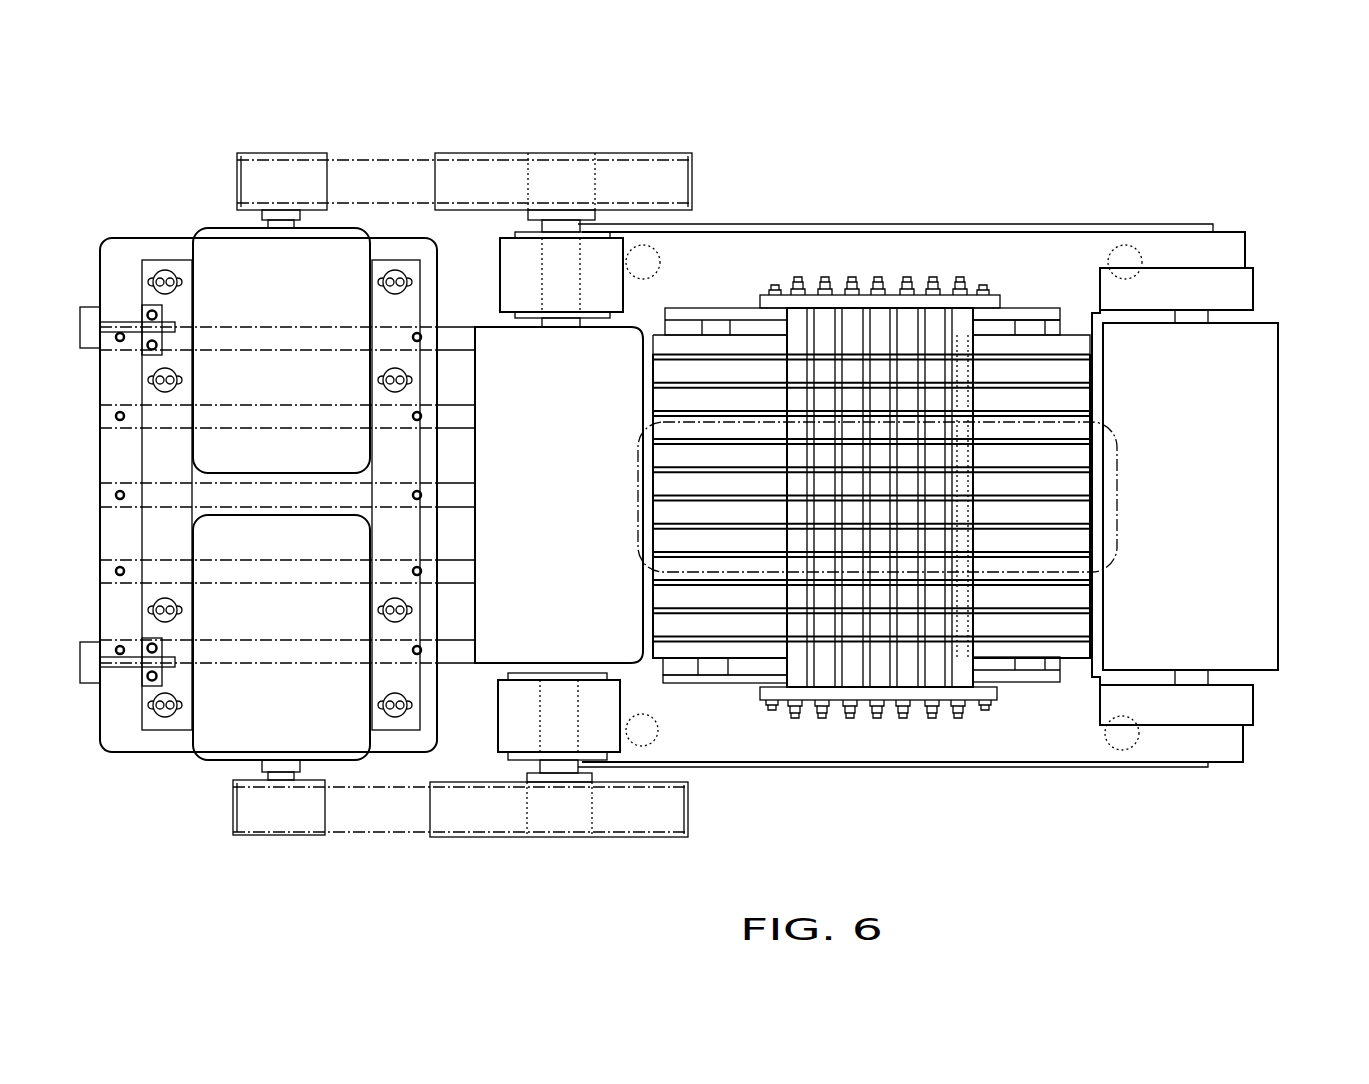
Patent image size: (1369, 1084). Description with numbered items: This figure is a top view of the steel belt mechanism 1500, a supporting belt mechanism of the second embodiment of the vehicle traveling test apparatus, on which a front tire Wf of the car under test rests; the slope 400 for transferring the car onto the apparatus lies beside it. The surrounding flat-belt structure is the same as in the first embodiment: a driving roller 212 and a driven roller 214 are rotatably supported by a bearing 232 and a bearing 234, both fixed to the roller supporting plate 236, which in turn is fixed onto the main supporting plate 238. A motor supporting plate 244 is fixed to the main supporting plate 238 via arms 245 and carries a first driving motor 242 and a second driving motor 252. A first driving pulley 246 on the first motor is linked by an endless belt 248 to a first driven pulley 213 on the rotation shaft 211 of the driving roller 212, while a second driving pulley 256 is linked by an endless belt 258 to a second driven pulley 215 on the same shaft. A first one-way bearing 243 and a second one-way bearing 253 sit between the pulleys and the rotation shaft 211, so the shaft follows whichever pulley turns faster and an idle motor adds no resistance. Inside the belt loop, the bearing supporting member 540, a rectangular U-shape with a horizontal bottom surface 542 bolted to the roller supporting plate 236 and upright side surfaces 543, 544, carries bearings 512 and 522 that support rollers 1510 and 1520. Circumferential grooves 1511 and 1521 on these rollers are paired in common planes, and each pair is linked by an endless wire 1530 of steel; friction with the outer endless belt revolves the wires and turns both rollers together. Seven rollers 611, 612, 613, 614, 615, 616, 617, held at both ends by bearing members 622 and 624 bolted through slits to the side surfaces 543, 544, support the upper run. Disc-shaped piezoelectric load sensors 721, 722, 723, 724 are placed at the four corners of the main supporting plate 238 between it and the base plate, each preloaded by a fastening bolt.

The rotation shaft 211 is at (540, 288).
The driving roller 212 is at (470, 352).
The first driven pulley 213 is at (655, 838).
The driven roller 214 is at (1280, 375).
The second driven pulley 215 is at (500, 153).
The bearing 232 is at (500, 250).
The bearing 234 is at (1253, 291).
The roller supporting plate 236 is at (1000, 763).
The main supporting plate 238 is at (1100, 768).
The first driving motor 242 is at (210, 762).
The first one-way bearing 243 is at (527, 815).
The motor supporting plate 244 is at (123, 256).
The arms 245 is at (470, 326).
The first driving pulley 246 is at (286, 836).
The endless belt 248 is at (382, 838).
The second driving motor 252 is at (213, 228).
The second one-way bearing 253 is at (600, 184).
The second driving pulley 256 is at (273, 153).
The endless belt 258 is at (382, 159).
The slope 400 is at (1278, 500).
The bearing 512 is at (745, 312).
The bearing 522 is at (1040, 681).
The bearing supporting member 540 is at (833, 495).
The bottom surface 542 is at (660, 658).
The side surface 543 is at (690, 683).
The side surface 544 is at (690, 308).
The roller 611 is at (812, 322).
The roller 612 is at (810, 690).
The roller 613 is at (868, 322).
The roller 614 is at (862, 690).
The roller 615 is at (922, 322).
The roller 616 is at (918, 690).
The roller 617 is at (990, 322).
The bearing member 622 is at (950, 696).
The bearing member 624 is at (995, 306).
The load sensor 721 is at (658, 745).
The load sensor 722 is at (1139, 734).
The load sensor 723 is at (659, 256).
The load sensor 724 is at (1142, 262).
The steel belt mechanism 1500 is at (871, 418).
The roller 1510 is at (655, 410).
The grooves 1511 is at (655, 345).
The roller 1520 is at (1071, 506).
The grooves 1521 is at (1085, 345).
The endless wire 1530 is at (655, 372).
The front tire Wf is at (640, 500).